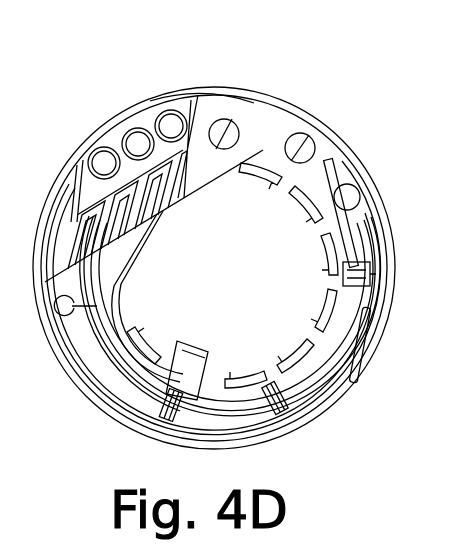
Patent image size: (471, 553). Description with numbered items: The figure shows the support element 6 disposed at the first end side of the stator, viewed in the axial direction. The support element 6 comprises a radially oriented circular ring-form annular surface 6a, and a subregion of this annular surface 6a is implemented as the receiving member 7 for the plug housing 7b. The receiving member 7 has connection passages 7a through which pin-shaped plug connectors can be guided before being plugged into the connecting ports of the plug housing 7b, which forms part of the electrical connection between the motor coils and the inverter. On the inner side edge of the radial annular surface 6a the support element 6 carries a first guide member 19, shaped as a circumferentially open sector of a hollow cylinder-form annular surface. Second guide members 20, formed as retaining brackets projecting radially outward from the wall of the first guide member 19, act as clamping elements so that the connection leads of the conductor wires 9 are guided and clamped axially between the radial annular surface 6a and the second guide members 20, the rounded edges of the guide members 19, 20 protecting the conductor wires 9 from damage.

The support element 6 is at (385, 156).
The radially oriented annular surface 6a is at (249, 142).
The receiving member 7 is at (100, 116).
The connection passages 7a is at (170, 125).
The plug housing 7b is at (90, 337).
The conductor wires 9 is at (90, 337).
The first guide member 19 is at (280, 142).
The second guide members 20 is at (48, 348).